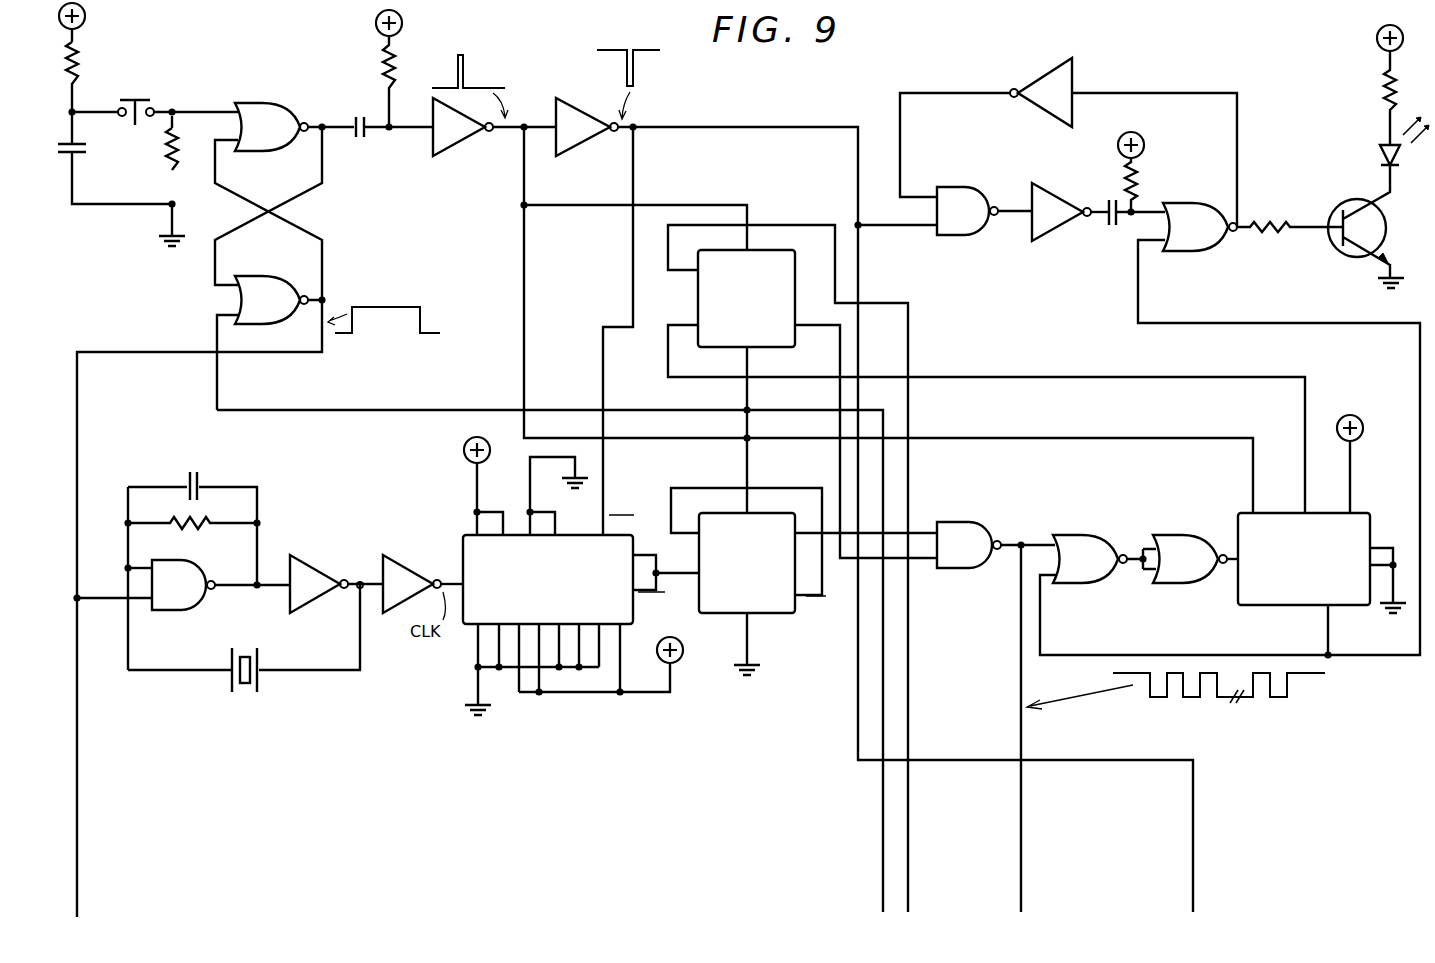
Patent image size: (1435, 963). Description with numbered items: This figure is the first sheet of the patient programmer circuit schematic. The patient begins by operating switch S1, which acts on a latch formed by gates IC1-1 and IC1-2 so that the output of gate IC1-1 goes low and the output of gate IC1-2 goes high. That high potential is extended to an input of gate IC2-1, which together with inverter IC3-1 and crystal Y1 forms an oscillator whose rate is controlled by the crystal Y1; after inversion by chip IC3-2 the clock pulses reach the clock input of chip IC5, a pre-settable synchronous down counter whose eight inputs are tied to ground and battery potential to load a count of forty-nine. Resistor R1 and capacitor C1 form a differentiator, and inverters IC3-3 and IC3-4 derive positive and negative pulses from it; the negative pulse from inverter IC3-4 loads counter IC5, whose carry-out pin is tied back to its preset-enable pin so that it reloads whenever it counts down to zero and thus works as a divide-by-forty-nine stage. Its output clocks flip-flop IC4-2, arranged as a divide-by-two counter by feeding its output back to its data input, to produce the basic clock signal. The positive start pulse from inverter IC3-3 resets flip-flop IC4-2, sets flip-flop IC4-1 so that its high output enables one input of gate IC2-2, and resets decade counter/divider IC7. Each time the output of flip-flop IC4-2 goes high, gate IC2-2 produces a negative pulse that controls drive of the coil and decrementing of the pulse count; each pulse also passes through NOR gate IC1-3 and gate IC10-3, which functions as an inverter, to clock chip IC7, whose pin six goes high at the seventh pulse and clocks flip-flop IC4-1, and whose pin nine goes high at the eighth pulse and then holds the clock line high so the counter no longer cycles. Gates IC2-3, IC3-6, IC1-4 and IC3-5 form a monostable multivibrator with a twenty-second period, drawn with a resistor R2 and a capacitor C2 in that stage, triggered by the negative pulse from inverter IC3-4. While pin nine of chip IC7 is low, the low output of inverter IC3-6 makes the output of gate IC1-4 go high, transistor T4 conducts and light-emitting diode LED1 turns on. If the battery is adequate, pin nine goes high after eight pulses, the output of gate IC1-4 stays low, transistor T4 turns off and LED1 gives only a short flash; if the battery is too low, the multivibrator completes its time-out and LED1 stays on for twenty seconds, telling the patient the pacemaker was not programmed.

The switch S1 is at (150, 106).
The resistor R1 is at (380, 68).
The capacitor C1 is at (366, 140).
The gate IC1-1 is at (286, 106).
The gate IC1-2 is at (271, 288).
The inverter IC3-3 is at (458, 157).
The inverter IC3-4 is at (590, 157).
The inverter IC3-5 is at (1042, 70).
The gate IC2-3 is at (960, 236).
The inverter IC3-6 is at (1058, 243).
The resistor R2 is at (1139, 186).
The capacitor C2 is at (1110, 226).
The gate IC1-4 is at (1208, 250).
The transistor T4 is at (1355, 257).
The light-emitting diode LED1 is at (1378, 153).
The flip-flop IC4-1 is at (759, 298).
The flip-flop IC4-2 is at (763, 563).
The chip IC5 is at (564, 582).
The gate IC2-1 is at (200, 612).
The crystal Y1 is at (247, 650).
The inverter IC3-1 is at (318, 560).
The chip IC3-2 is at (404, 560).
The gate IC2-2 is at (972, 511).
The NOR gate IC1-3 is at (1080, 535).
The gate IC10-3 is at (1182, 535).
The chip IC7 is at (1304, 560).